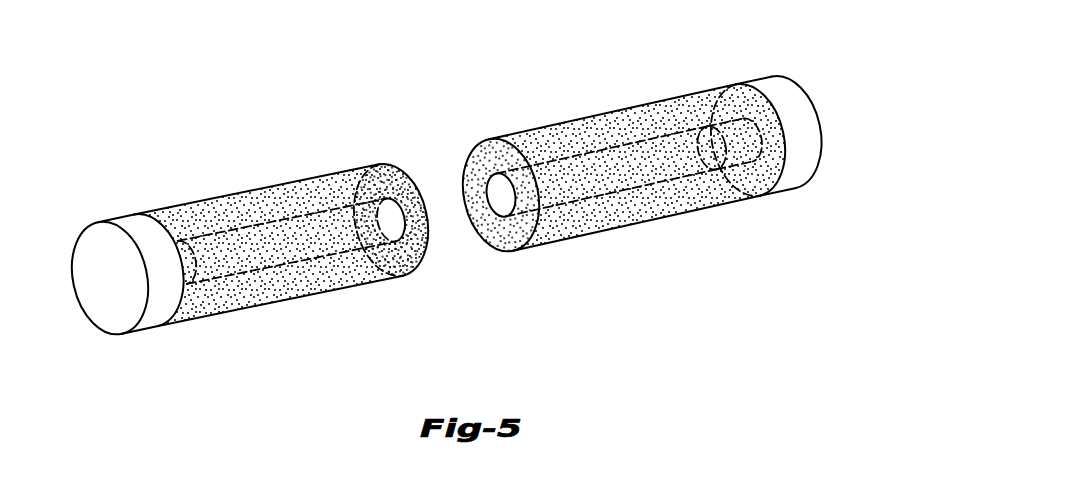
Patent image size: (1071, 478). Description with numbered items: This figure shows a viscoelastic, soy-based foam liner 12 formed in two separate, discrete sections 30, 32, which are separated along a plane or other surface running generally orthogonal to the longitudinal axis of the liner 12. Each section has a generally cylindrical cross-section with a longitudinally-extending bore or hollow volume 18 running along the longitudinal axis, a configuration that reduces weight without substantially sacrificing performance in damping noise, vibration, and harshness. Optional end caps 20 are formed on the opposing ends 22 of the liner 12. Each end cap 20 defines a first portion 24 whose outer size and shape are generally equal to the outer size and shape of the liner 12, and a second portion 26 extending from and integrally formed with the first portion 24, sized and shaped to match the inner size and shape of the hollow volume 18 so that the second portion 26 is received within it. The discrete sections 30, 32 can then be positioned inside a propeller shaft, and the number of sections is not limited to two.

The viscoelastic, soy-based foam liner 12 is at (318, 175).
The hollow volume 18 is at (261, 266).
The end cap 20 is at (467, 216).
The opposing end 22 is at (732, 81).
The first portion 24 is at (787, 192).
The second portion 26 is at (757, 143).
The discrete section 30 is at (200, 198).
The discrete section 32 is at (690, 93).